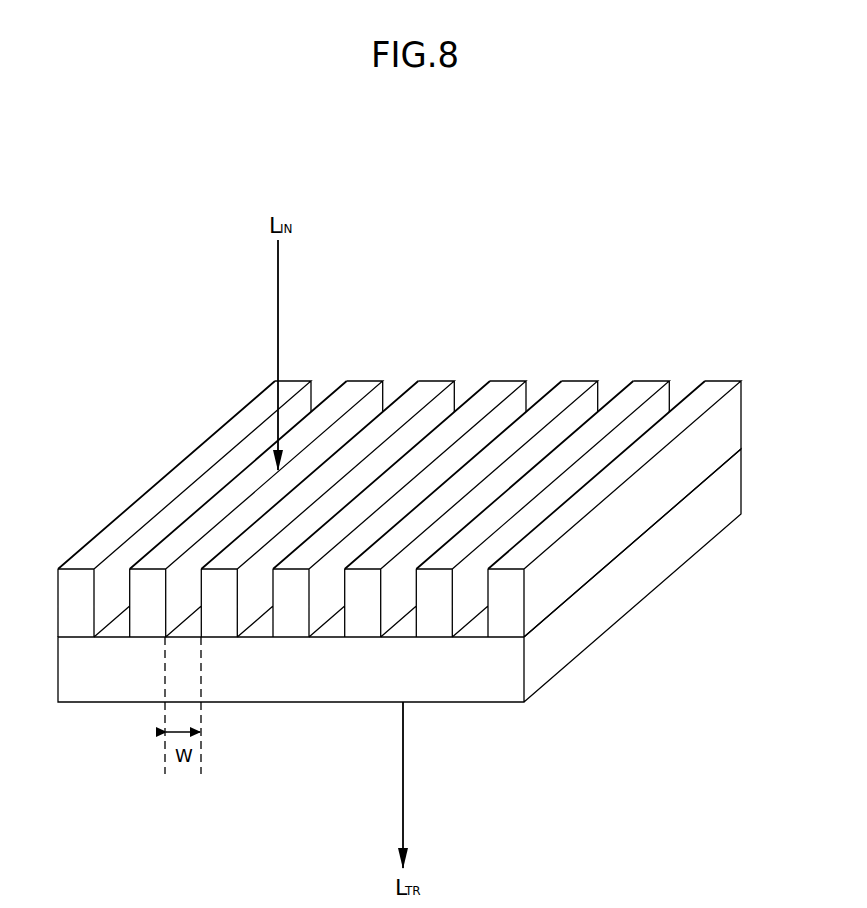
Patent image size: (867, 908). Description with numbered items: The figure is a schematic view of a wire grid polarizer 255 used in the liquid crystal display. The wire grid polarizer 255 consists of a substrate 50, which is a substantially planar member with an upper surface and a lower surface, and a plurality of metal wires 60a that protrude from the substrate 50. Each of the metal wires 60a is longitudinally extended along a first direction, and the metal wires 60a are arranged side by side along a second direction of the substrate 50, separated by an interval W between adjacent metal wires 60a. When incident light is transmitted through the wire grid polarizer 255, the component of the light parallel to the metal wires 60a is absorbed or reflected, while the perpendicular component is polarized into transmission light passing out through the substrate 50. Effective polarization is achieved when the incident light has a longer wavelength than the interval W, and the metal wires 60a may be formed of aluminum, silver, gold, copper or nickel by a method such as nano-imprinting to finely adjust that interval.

The substrate 50 is at (500, 672).
The metal wires 60a is at (570, 388).
The wire grid polarizer 255 is at (409, 493).